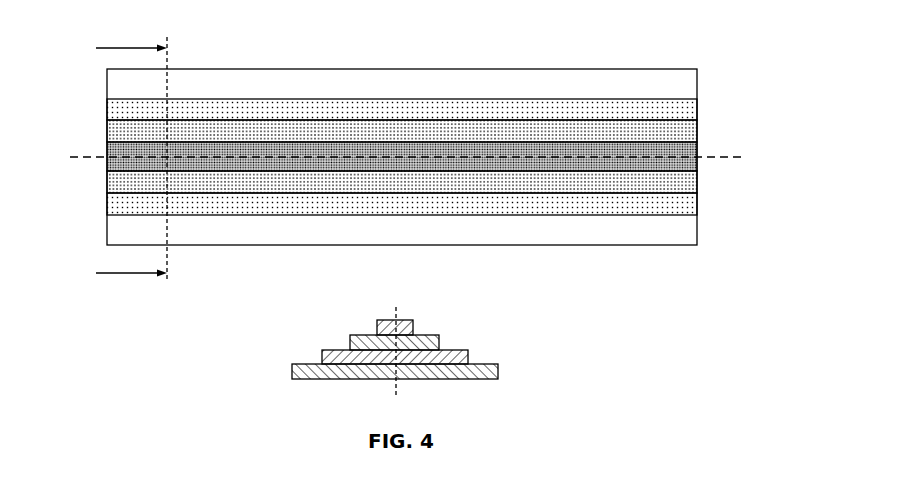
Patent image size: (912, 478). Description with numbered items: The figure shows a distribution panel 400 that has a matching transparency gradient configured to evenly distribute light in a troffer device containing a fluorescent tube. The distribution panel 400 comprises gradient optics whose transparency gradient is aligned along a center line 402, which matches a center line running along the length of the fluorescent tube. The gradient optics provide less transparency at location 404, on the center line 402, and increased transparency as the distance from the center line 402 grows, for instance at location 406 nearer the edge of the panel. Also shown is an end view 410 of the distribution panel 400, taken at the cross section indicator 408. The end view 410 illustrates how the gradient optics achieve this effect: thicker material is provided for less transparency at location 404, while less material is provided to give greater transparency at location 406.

The distribution panel 400 is at (407, 141).
The center line 402 is at (431, 141).
The location of less transparency 404 is at (359, 143).
The location of increased transparency 406 is at (359, 145).
The cross section indicator 408 is at (168, 154).
The end view 410 is at (432, 341).